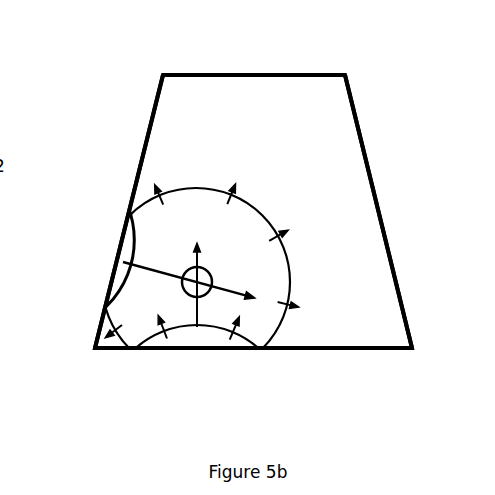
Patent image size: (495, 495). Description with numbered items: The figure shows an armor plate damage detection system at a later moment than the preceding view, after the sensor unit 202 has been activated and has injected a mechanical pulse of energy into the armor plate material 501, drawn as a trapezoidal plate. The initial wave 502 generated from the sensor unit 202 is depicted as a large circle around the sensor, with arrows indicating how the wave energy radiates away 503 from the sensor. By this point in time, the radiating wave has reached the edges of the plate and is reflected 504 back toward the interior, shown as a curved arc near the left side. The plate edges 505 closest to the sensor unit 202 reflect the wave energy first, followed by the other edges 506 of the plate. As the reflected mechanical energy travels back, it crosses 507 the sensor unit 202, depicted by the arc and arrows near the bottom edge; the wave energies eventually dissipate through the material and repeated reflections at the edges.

The armor plate material 501 is at (253, 211).
The initial wave 502 is at (277, 325).
The radiating direction of wave 503 is at (235, 186).
The reflected wave 504 is at (180, 327).
The plate edges closest to the sensor 505 is at (167, 347).
The other edges of the plate 506 is at (379, 207).
The crossing of the sensor unit by reflected energy 507 is at (232, 292).
The sensor unit 202 is at (213, 280).